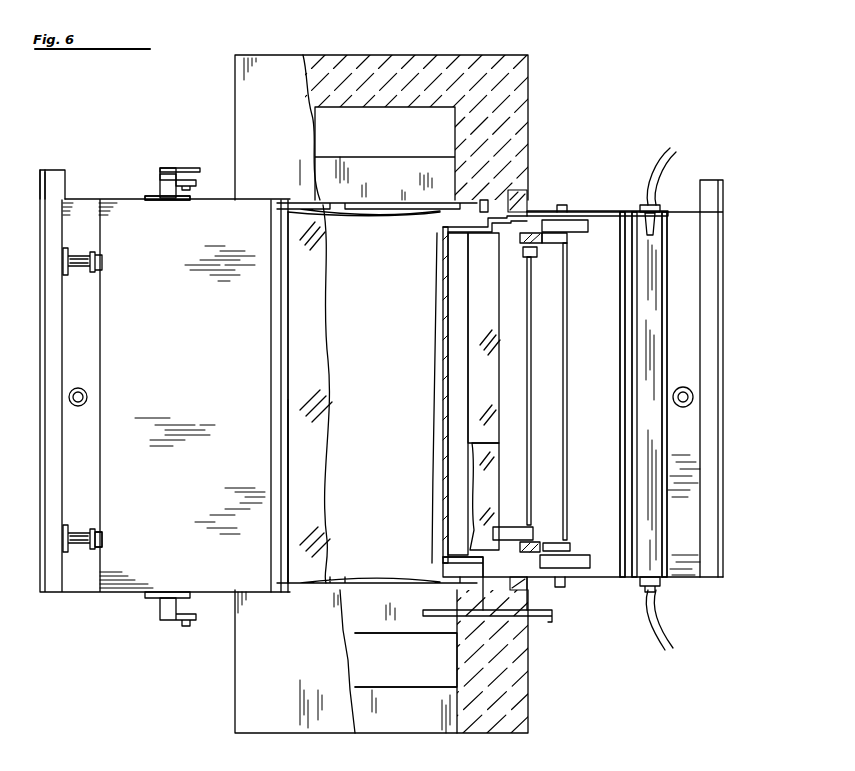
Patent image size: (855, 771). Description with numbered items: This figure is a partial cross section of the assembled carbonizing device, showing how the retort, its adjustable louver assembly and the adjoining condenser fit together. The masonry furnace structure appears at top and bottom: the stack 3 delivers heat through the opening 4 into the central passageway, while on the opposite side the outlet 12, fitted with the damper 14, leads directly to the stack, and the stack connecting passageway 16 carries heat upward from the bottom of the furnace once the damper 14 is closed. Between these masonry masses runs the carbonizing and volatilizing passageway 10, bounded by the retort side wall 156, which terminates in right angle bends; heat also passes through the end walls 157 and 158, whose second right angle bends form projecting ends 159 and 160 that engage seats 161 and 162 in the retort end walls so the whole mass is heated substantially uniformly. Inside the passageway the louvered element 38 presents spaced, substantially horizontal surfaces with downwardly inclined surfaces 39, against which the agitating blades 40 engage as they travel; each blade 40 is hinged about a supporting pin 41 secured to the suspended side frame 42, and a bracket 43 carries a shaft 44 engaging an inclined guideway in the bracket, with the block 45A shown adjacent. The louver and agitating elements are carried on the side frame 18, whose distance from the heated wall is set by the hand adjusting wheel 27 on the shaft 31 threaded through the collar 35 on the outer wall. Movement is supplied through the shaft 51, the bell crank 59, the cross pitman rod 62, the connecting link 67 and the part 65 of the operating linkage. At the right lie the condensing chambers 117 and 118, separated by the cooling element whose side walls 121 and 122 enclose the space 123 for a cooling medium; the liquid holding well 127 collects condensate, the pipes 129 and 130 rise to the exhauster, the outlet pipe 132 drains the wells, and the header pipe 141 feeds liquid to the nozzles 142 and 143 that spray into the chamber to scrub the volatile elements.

The stack 3 is at (415, 133).
The opening 4 is at (405, 200).
The carbonizing and volatilizing passageway 10 is at (445, 262).
The outlet 12 is at (370, 590).
The damper 14 is at (395, 635).
The stack connecting passageway 16 is at (410, 677).
The side frame 18 is at (569, 206).
The hand adjusting wheel 27 is at (66, 262).
The shaft 31 is at (78, 272).
The collar 35 is at (103, 538).
The louvered element 38 is at (468, 404).
The downwardly inclined surface 39 is at (407, 386).
The agitating blade 40 is at (488, 470).
The supporting pin 41 is at (534, 322).
The side frame 42 is at (526, 252).
The bracket 43 is at (554, 245).
The shaft 44 is at (567, 305).
The mounting block 45A is at (583, 237).
The shaft 51 is at (168, 168).
The bell crank 59 is at (160, 178).
The cross pitman rod 62 is at (192, 170).
The clip base 65 is at (172, 200).
The connecting link 67 is at (190, 184).
The condensing chamber 117 is at (655, 430).
The condensing chamber 118 is at (616, 320).
The side wall of cooling element 121 is at (655, 366).
The side wall of cooling element 122 is at (620, 395).
The space 123 is at (630, 345).
The liquid holding well 127 is at (50, 570).
The pipe 129 is at (696, 396).
The pipe 130 is at (70, 400).
The outlet pipe 132 is at (55, 178).
The header pipe 141 is at (674, 150).
The nozzle 142 is at (660, 584).
The nozzle 143 is at (660, 204).
The side wall 156 is at (443, 305).
The end wall 157 is at (452, 216).
The end wall 158 is at (460, 565).
The projecting end 159 is at (527, 203).
The projecting end 160 is at (455, 592).
The seat 161 is at (462, 616).
The seat 162 is at (512, 193).